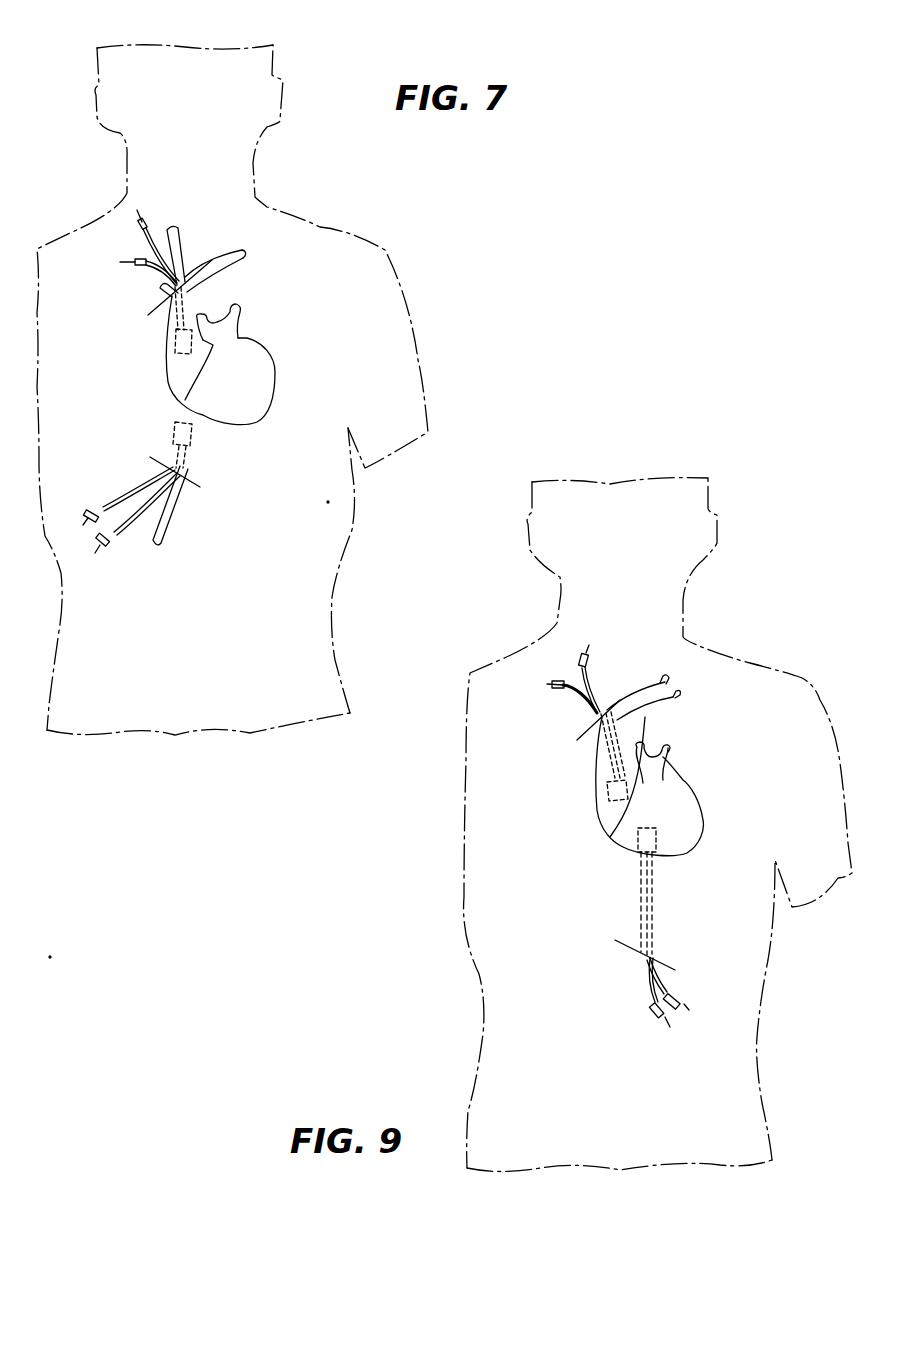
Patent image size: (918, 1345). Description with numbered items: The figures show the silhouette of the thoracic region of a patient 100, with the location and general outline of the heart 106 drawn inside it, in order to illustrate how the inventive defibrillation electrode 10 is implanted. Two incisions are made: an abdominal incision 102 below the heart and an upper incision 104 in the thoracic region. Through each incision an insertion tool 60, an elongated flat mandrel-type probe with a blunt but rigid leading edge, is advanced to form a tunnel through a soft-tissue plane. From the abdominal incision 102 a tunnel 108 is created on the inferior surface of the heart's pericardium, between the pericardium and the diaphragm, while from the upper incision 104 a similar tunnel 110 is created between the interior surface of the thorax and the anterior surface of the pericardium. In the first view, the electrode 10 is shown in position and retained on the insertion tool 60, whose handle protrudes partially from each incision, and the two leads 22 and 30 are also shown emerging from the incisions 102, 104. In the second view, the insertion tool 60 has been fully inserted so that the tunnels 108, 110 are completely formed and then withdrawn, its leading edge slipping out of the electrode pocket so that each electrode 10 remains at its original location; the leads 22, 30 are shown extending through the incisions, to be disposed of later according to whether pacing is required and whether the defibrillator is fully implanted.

In FIG. 7, the electrode 10 is at (170, 355).
In FIG. 9, the electrode 10 is at (612, 797).
In FIG. 7, the lead 22 is at (152, 237).
In FIG. 9, the lead 22 is at (580, 690).
In FIG. 7, the lead 30 is at (145, 270).
In FIG. 9, the lead 30 is at (585, 678).
In FIG. 7, the insertion tool 60 is at (186, 233).
In FIG. 7, the patient 100 is at (380, 240).
In FIG. 9, the patient 100 is at (768, 683).
In FIG. 7, the abdominal incision 102 is at (198, 487).
In FIG. 7, the upper incision 104 is at (157, 302).
In FIG. 7, the heart 106 is at (289, 320).
In FIG. 9, the heart 106 is at (703, 793).
In FIG. 7, the tunnel 108 is at (165, 452).
In FIG. 9, the tunnel 108 is at (652, 907).
In FIG. 7, the tunnel 110 is at (221, 293).
In FIG. 9, the tunnel 110 is at (602, 757).